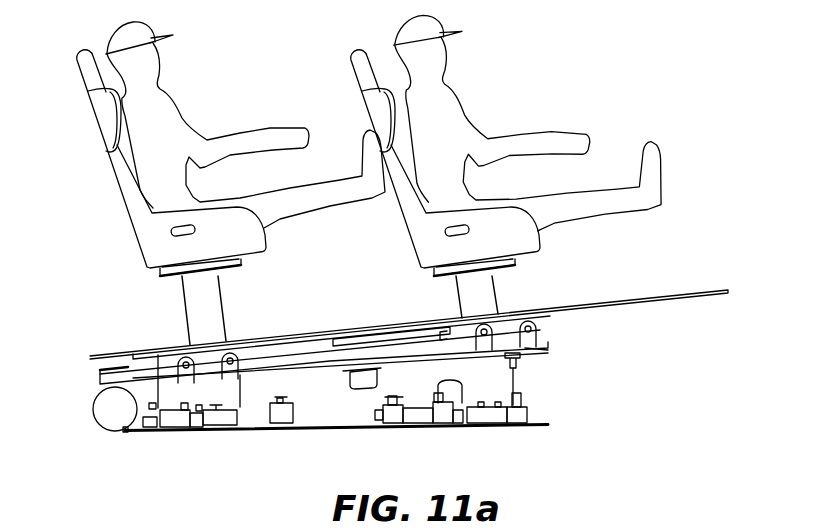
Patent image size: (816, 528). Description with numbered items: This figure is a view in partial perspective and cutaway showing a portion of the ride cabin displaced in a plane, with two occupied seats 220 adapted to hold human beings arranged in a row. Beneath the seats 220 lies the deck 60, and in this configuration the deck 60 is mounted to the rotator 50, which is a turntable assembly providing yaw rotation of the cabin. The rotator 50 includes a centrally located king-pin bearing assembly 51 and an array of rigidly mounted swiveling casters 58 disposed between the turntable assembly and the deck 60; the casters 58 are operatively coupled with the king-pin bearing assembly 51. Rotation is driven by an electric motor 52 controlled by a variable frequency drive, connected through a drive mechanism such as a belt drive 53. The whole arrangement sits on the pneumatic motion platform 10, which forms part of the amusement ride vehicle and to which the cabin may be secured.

The seat 220 is at (82, 62).
The deck 60 is at (663, 290).
The swiveling casters 58 is at (234, 366).
The rotator 50 is at (537, 347).
The belt drive 53 is at (280, 360).
The king-pin bearing assembly 51 is at (358, 384).
The electric motor 52 is at (100, 405).
The pneumatic motion platform 10 is at (432, 438).